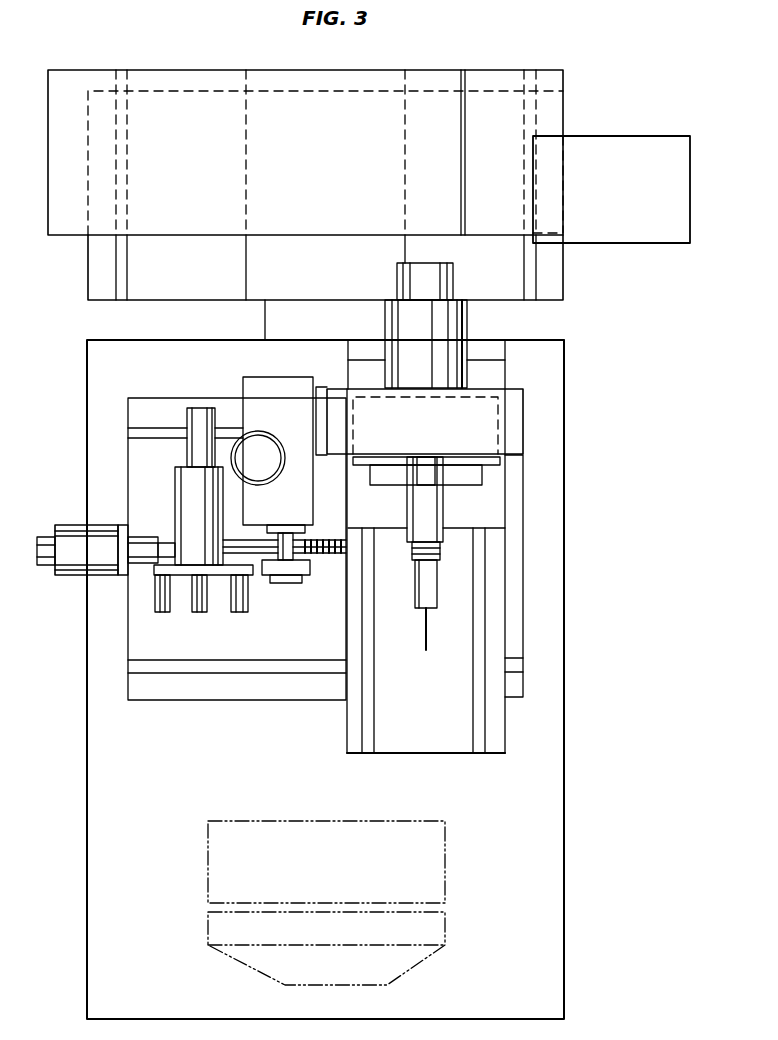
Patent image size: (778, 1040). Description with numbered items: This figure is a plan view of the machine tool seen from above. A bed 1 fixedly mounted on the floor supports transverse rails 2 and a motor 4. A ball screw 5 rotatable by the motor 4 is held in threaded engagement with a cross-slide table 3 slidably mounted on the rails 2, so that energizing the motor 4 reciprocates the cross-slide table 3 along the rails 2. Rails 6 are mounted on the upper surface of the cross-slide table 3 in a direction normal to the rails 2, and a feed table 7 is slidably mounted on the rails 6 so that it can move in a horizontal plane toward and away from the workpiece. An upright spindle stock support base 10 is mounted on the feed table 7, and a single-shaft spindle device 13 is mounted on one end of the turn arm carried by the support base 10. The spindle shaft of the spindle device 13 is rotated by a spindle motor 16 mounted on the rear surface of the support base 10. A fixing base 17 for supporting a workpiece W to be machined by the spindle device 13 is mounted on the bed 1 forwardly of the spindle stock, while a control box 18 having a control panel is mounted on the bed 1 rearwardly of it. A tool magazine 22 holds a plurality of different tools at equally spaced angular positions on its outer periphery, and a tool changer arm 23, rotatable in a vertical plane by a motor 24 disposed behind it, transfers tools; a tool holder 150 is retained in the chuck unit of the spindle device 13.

The bed 1 is at (533, 808).
The transverse rails 2 is at (155, 665).
The cross-slide table 3 is at (497, 610).
The motor 4 is at (75, 530).
The ball screw 5 is at (326, 555).
The rails 6 is at (478, 740).
The feed table 7 is at (497, 508).
The spindle stock support base 10 is at (513, 418).
The single-shaft spindle device 13 is at (427, 531).
The spindle motor 16 is at (453, 322).
The fixing base 17 is at (445, 932).
The control box 18 is at (552, 110).
The tool magazine 22 is at (155, 570).
The tool changer arm 23 is at (287, 568).
The motor 24 is at (250, 445).
The tool holder 150 is at (422, 600).
The workpiece W is at (443, 877).